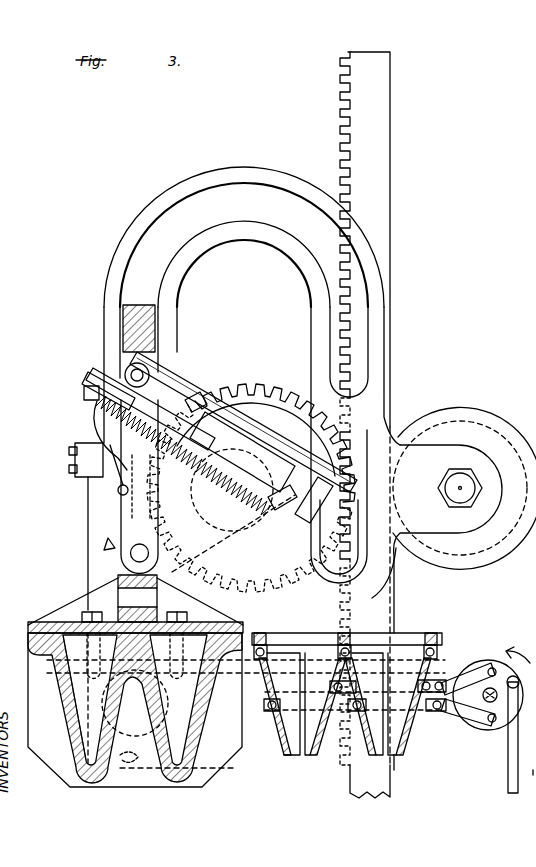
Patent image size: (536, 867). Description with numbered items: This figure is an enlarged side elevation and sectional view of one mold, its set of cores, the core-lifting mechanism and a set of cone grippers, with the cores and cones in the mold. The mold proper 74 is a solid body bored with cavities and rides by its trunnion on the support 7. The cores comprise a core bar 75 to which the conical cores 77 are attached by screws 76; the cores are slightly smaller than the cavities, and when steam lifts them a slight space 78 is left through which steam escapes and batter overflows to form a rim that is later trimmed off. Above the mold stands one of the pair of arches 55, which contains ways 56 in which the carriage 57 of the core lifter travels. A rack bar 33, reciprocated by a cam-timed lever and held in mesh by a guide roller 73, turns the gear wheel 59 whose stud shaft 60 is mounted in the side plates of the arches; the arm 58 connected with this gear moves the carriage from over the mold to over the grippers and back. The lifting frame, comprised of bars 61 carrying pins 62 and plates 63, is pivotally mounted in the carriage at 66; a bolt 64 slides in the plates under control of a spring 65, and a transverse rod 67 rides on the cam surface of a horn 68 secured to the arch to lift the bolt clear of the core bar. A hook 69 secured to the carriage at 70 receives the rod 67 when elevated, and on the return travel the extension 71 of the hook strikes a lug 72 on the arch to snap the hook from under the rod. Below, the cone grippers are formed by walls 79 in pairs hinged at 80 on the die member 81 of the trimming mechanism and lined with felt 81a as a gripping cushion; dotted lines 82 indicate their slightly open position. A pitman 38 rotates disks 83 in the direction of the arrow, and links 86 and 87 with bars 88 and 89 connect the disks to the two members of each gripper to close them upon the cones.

The rack bar 33 is at (388, 112).
The arches 55 is at (172, 194).
The ways or guides 56 is at (258, 183).
The travelling frame or carriage 57 is at (123, 310).
The arm 58 is at (106, 541).
The gear wheel 59 is at (291, 395).
The stud shaft 60 is at (243, 422).
The bars of the lifting frame 61 is at (223, 390).
The pins 62 is at (310, 516).
The plates 63 is at (190, 393).
The bolt 64 is at (112, 378).
The spring 65 is at (218, 485).
The pivot 66 is at (128, 370).
The transverse rod 67 is at (206, 436).
The horn 68 is at (75, 458).
The hook 69 is at (118, 490).
The hook pivot 70 is at (96, 425).
The extension of the hook 71 is at (88, 383).
The lug 72 is at (84, 395).
The guide roller 73 is at (455, 408).
The mold proper 74 is at (58, 693).
The core bar 75 is at (62, 613).
The screws 76 is at (86, 612).
The conical cores 77 is at (78, 662).
The space 78 is at (28, 629).
The walls 79 is at (282, 742).
The hinges 80 is at (434, 645).
The die member 81 is at (260, 633).
The felt lining 81a is at (272, 711).
The dotted lines 82 is at (398, 770).
The disks 83 is at (486, 731).
The link 86 is at (470, 668).
The link 87 is at (468, 722).
The bars 88 is at (340, 680).
The bars 89 is at (352, 711).
The pitman 38 is at (508, 783).
The support 7 is at (531, 780).